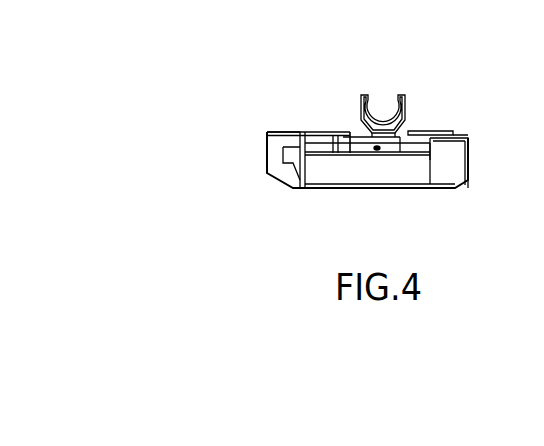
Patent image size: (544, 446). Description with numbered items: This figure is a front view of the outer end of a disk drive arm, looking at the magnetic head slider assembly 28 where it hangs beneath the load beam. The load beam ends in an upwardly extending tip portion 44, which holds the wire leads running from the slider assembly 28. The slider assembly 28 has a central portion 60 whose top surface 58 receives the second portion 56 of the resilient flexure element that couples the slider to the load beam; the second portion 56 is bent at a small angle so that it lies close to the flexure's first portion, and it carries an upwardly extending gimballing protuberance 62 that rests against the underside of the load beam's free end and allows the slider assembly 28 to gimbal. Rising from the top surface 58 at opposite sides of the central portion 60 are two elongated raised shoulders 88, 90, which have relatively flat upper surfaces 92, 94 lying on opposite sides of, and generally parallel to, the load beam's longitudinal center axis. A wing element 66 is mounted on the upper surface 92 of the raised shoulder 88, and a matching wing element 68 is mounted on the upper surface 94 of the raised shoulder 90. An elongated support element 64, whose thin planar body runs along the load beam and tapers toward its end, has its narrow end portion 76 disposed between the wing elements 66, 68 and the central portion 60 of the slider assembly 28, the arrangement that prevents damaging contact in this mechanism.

The magnetic head slider assembly 28 is at (322, 172).
The raised shoulder 88 is at (312, 143).
The upper surface 92 is at (300, 128).
The wing element 66 is at (303, 138).
The top surface 58 is at (340, 152).
The second portion 56 is at (400, 152).
The central portion 60 is at (383, 152).
The gimballing protuberance 62 is at (376, 148).
The tip portion 44 is at (405, 102).
The elongated support element 64 is at (412, 150).
The wing element 68 is at (430, 132).
The raised shoulder 90 is at (450, 160).
The upper surface 94 is at (470, 138).
The end portion 76 is at (420, 143).